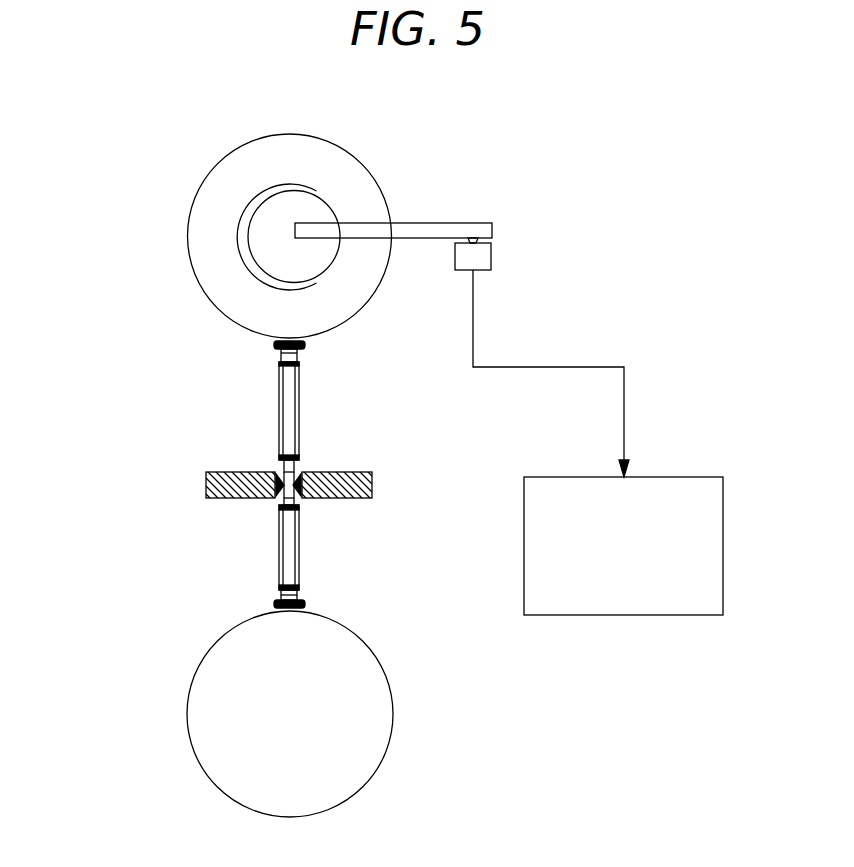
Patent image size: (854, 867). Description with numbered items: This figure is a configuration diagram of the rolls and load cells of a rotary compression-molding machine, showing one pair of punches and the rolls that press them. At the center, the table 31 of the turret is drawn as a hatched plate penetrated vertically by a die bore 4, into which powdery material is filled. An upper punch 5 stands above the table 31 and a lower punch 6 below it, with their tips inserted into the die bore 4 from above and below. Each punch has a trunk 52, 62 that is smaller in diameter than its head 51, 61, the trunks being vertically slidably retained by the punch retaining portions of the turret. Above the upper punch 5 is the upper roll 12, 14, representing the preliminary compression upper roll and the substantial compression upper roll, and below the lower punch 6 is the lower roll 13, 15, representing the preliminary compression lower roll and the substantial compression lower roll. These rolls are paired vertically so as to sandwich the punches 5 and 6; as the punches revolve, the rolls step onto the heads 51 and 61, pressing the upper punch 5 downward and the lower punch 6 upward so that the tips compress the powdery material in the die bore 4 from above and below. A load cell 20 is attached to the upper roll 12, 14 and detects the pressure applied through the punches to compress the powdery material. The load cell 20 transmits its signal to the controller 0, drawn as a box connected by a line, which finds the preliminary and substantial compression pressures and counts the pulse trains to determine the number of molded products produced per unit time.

The controller 0 is at (734, 547).
The die bore 4 is at (320, 500).
The upper punch 5 is at (292, 417).
The lower punch 6 is at (291, 544).
The motor / fan 12, 14 is at (188, 236).
The weight / mass 13, 15 is at (393, 714).
The load cell 20 is at (491, 257).
The table 31 is at (372, 485).
The head 51 is at (305, 346).
The trunk 52 is at (300, 412).
The head 61 is at (305, 604).
The trunk 62 is at (300, 545).